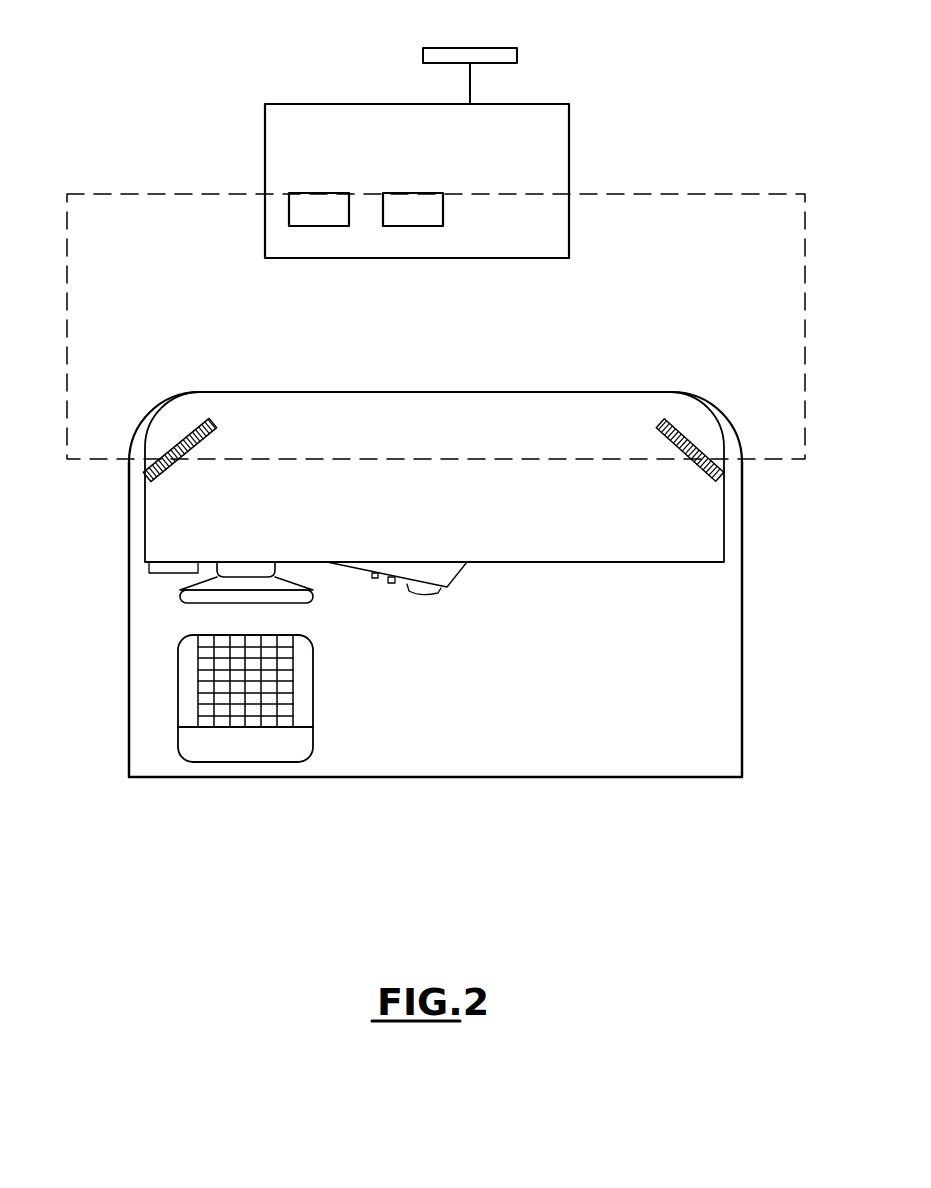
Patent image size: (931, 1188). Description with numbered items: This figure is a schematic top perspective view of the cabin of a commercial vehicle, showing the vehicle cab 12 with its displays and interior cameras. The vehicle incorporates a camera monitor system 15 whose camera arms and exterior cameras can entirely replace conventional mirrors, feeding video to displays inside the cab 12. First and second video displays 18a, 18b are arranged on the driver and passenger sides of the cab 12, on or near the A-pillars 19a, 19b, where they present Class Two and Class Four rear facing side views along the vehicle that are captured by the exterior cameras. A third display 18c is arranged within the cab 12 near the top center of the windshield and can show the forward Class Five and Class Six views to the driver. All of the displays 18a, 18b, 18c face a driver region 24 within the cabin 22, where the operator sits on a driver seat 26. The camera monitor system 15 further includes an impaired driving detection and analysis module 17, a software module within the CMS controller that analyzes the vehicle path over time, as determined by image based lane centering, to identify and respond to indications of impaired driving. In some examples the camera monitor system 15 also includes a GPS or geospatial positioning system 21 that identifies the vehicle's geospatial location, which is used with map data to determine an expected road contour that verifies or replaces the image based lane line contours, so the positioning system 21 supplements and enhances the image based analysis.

The vehicle cab 12 is at (549, 371).
The camera monitor system 15 is at (569, 117).
The impaired driving detection and analysis module 17 is at (317, 226).
The first video display 18a is at (178, 430).
The second video display 18b is at (693, 433).
The third display 18c is at (503, 48).
The driver side A-pillar 19a is at (148, 432).
The passenger side A-pillar 19b is at (723, 433).
The geospatial positioning system 21 is at (411, 226).
The cabin 22 is at (659, 722).
The driver region 24 is at (375, 588).
The driver seat 26 is at (300, 685).